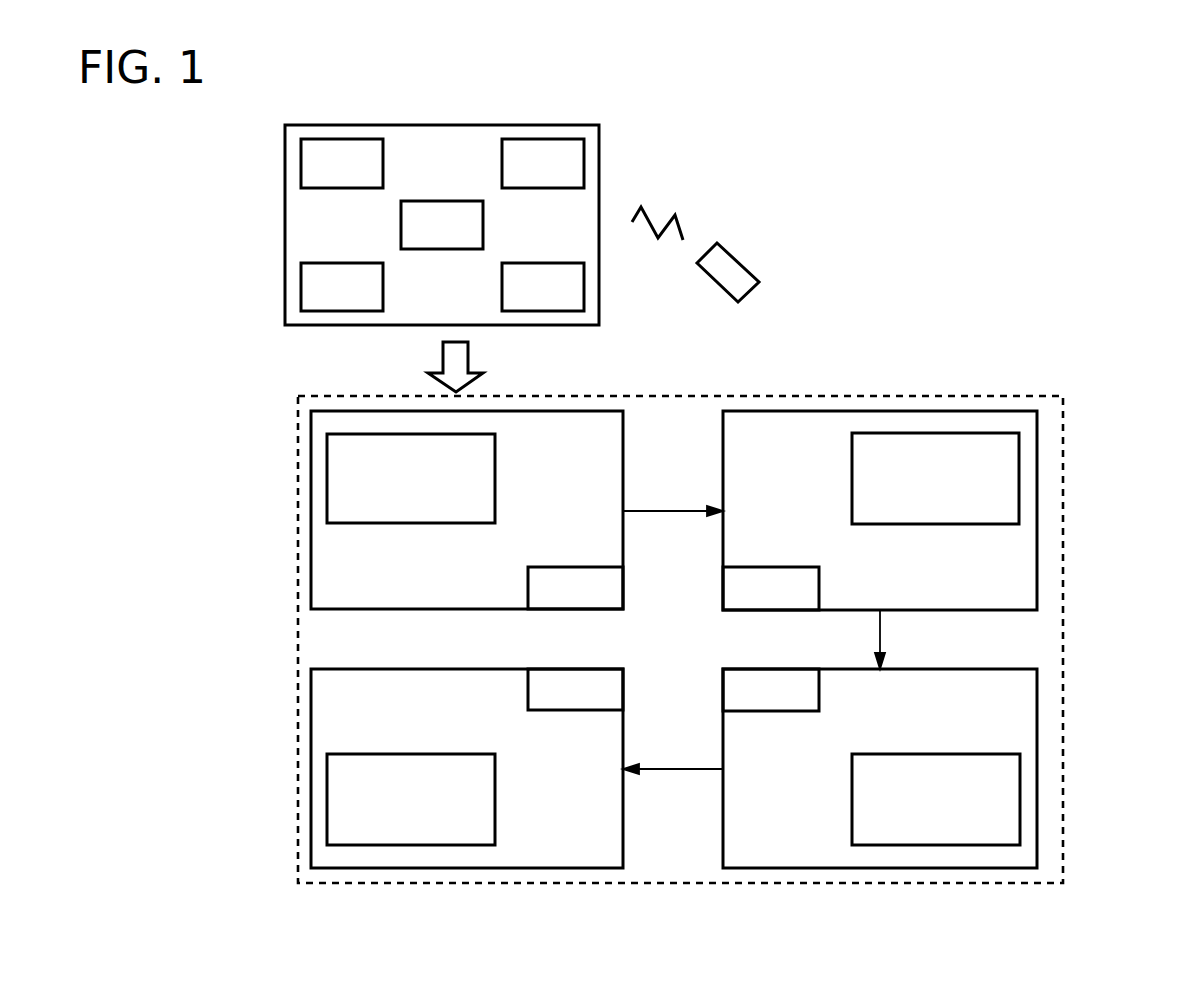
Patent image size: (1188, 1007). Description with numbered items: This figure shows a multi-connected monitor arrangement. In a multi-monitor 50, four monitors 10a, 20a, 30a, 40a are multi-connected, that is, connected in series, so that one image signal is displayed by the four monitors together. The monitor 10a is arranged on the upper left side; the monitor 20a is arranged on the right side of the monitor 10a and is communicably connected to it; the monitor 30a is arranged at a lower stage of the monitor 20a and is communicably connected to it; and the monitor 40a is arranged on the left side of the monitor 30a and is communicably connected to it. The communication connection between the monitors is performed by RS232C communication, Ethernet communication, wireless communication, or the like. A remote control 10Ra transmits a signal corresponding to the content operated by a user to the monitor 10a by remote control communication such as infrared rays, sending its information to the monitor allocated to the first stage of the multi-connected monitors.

The monitor 10a is at (285, 184).
The remote control 10Ra is at (735, 261).
The multi-monitor 50 is at (940, 396).
The monitor 20a is at (1037, 538).
The monitor 30a is at (1037, 712).
The monitor 40a is at (311, 726).